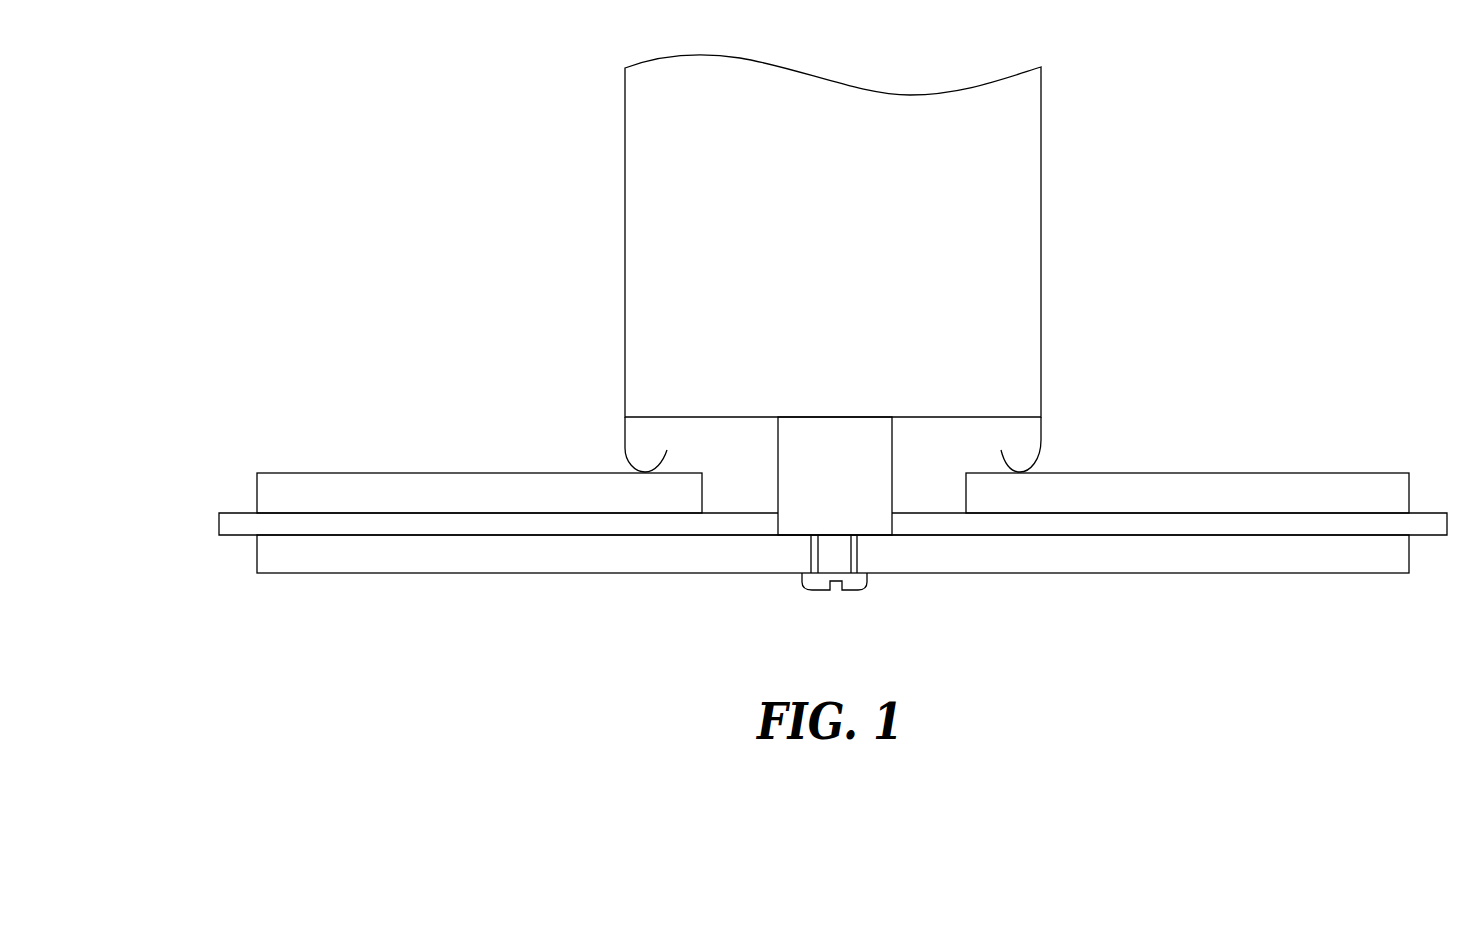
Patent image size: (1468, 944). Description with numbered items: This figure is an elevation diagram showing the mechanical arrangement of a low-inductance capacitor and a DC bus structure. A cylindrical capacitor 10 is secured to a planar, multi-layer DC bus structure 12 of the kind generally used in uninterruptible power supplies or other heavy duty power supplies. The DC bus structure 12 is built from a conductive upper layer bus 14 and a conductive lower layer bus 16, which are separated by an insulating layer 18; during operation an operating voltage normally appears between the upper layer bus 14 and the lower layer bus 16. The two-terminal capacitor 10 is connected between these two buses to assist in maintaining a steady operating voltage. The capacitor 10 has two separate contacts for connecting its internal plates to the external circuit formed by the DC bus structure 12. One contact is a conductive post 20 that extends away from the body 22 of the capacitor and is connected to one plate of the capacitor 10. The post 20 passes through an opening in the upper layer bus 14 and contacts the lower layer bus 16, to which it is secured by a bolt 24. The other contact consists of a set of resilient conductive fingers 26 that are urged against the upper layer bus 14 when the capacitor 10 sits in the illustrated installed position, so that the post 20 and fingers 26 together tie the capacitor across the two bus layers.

The cylindrical capacitor 10 is at (837, 263).
The DC bus structure 12 is at (796, 522).
The upper layer bus 14 is at (357, 490).
The lower layer bus 16 is at (358, 557).
The insulating layer 18 is at (233, 512).
The conductive post 20 is at (812, 482).
The body 22 is at (1041, 219).
The bolt 24 is at (853, 590).
The resilient conductive fingers 26 is at (627, 443).